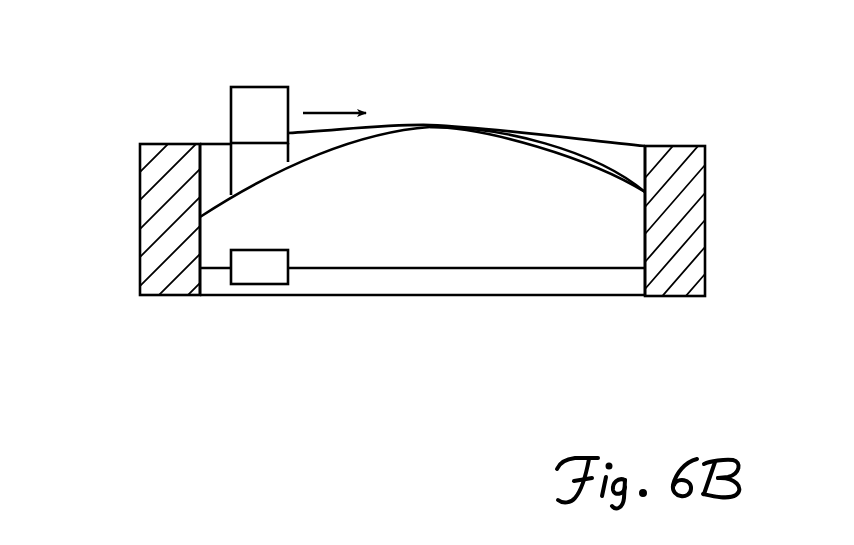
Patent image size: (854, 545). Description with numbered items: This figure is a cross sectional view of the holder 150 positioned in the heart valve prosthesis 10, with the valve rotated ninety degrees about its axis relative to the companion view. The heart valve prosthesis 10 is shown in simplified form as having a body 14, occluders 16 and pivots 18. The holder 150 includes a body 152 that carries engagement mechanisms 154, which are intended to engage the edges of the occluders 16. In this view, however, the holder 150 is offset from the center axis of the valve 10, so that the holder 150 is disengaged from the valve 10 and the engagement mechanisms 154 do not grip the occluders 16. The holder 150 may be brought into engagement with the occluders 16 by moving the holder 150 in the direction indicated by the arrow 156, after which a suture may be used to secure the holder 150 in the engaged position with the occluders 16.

The heart valve prosthesis 10 is at (126, 205).
The body 14 is at (138, 267).
The occluders 16 is at (447, 253).
The pivots 18 is at (200, 245).
The holder 150 is at (298, 85).
The body 152 is at (238, 103).
The engagement mechanisms 154 is at (260, 260).
The arrow 156 is at (330, 111).